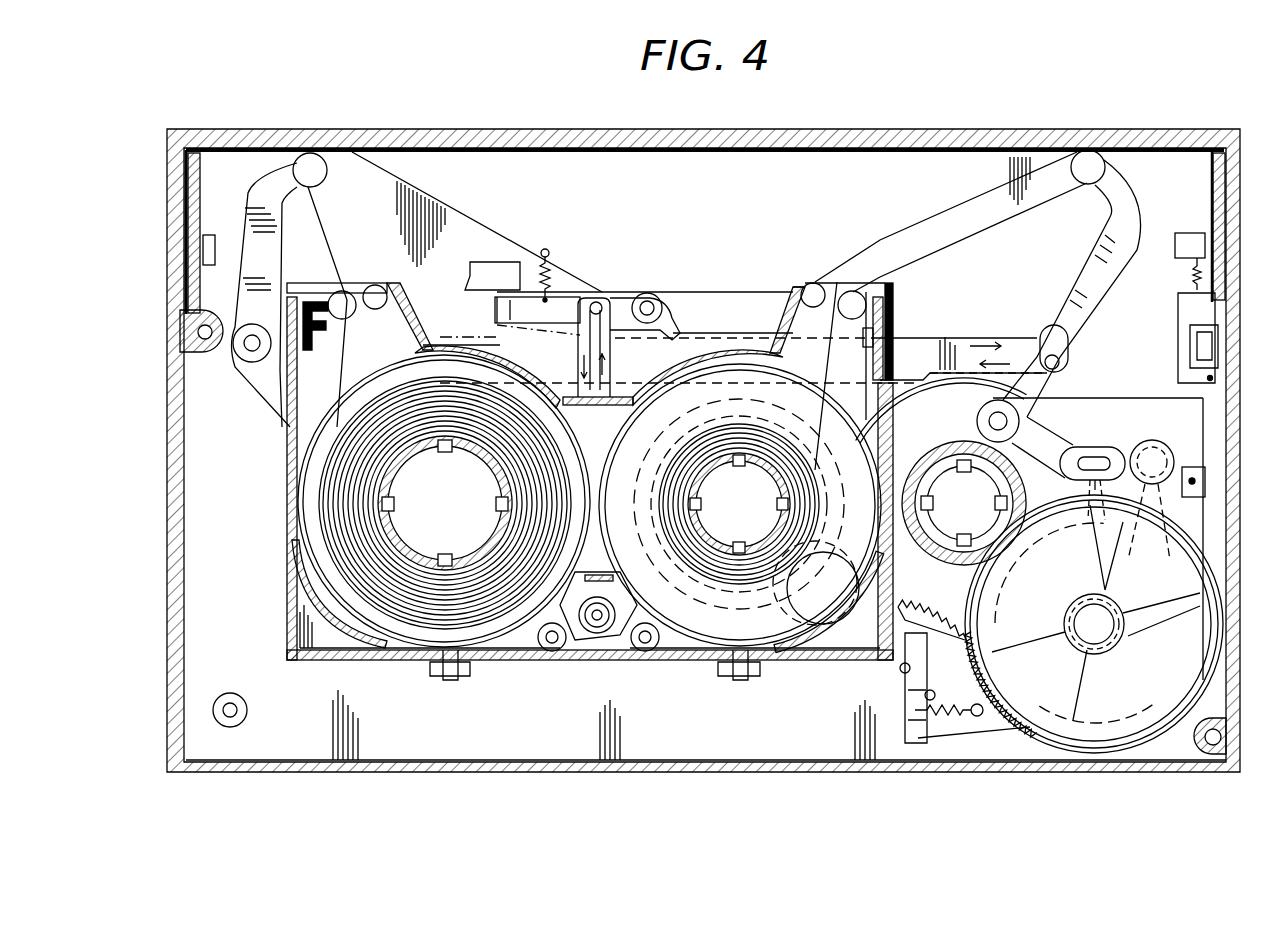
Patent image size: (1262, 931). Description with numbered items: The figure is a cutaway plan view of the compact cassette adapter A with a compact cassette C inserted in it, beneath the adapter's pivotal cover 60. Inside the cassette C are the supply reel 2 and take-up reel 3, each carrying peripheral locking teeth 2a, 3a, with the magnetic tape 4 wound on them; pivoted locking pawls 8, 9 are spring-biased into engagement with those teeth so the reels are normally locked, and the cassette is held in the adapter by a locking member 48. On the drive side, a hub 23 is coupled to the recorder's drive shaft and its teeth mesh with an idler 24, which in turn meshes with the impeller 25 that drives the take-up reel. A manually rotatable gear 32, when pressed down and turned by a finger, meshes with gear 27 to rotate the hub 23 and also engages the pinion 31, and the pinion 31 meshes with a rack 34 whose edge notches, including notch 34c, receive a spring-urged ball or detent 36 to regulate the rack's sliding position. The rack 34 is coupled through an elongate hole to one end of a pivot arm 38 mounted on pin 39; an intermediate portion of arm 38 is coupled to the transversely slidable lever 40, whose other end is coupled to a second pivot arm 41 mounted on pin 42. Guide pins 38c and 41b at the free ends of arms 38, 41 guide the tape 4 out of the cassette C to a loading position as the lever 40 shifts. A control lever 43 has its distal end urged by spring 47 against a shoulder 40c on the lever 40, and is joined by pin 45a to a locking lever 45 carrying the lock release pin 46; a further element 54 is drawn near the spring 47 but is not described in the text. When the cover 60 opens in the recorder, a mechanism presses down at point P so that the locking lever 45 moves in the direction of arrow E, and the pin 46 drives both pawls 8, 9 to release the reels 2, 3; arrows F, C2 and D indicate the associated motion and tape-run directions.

The cover 60 is at (550, 142).
The compact cassette adapter A is at (630, 770).
The compact cassette C is at (284, 500).
The tape run direction C C2 is at (996, 347).
The tape run direction D is at (981, 365).
The slide lever 40 is at (914, 344).
The projection or shoulder 40c is at (741, 332).
The guide pin 41b is at (310, 153).
The pivot arm 41 is at (262, 209).
The pin 42 is at (250, 354).
The erase head 54 is at (482, 270).
The spring 47 is at (552, 266).
The point P is at (484, 296).
The control lever 43 is at (560, 300).
The arrow E is at (581, 371).
The head motion direction F is at (606, 356).
The locking lever 45 is at (644, 296).
The pin 45a is at (600, 300).
The supply reel 2 is at (494, 640).
The locking teeth 2a is at (533, 640).
The take-up reel 3 is at (717, 617).
The locking teeth 3a is at (772, 650).
The impeller 25 is at (708, 430).
The idler 24 is at (834, 664).
The lock release pin 46 is at (604, 608).
The locking pawl 8 is at (564, 654).
The locking pawl 9 is at (640, 654).
The locking member 48 is at (448, 680).
The guide pin 38c is at (1086, 150).
The magnetic tape 4 is at (990, 222).
The pivot arm 38 is at (1100, 290).
The pin 39 is at (980, 422).
The rack 34 is at (1147, 494).
The ball or detent 36 is at (1150, 514).
The gear 27 is at (947, 556).
The manually rotatable gear 32 is at (1094, 750).
The pinion 31 is at (1072, 644).
The notch 34c is at (1142, 606).
The hub 23 is at (946, 628).